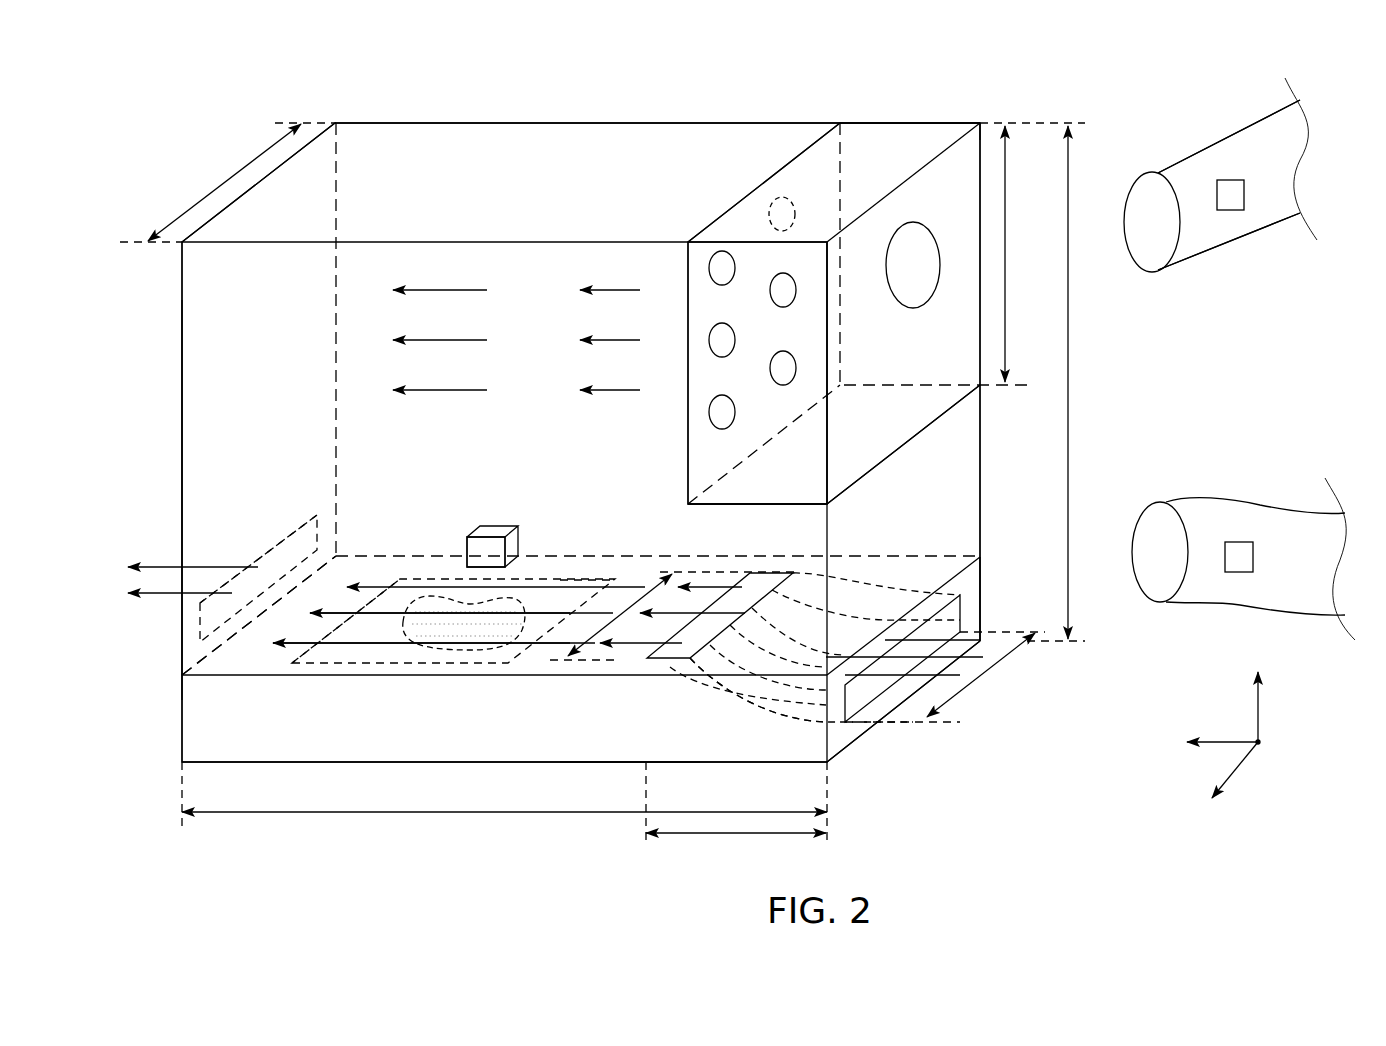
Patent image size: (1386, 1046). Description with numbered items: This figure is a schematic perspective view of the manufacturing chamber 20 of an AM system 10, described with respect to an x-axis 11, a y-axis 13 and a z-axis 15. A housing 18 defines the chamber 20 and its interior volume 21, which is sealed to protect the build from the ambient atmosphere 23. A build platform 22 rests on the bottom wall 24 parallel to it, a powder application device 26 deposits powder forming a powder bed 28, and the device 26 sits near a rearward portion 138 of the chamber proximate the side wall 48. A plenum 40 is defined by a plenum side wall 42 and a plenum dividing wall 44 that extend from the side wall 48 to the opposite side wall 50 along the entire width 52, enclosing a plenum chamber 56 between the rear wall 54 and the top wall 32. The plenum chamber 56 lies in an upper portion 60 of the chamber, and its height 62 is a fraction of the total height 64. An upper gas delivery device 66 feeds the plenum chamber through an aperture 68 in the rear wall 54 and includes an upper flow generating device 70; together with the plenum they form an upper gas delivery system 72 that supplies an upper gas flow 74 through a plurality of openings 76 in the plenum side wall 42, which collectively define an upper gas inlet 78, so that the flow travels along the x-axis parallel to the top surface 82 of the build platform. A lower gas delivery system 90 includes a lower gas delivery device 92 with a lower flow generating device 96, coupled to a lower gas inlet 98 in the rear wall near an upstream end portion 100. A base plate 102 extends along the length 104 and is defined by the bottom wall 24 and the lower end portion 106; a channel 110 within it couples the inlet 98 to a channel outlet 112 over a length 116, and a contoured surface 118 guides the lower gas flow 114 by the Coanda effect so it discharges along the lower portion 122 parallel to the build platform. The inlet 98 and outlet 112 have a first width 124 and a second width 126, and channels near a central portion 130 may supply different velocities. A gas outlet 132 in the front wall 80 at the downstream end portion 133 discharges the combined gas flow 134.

The AM system 10 is at (1092, 55).
The x-axis 11 is at (1212, 738).
The y-axis 13 is at (1240, 762).
The z-axis 15 is at (1262, 706).
The housing 18 is at (672, 121).
The manufacturing chamber 20 is at (458, 168).
The interior volume 21 is at (528, 452).
The build platform 22 is at (540, 665).
The ambient atmosphere 23 is at (1216, 372).
The bottom wall 24 is at (248, 678).
The powder application device 26 is at (492, 535).
The powder bed 28 is at (440, 630).
The top wall 32 is at (368, 121).
The plenum 40 is at (885, 150).
The plenum side wall 42 is at (686, 440).
The plenum dividing wall 44 is at (702, 505).
The side wall 48 is at (925, 121).
The side wall 50 is at (180, 336).
The width 52 is at (228, 176).
The rear wall 54 is at (981, 456).
The plenum chamber 56 is at (888, 436).
The upper portion 60 is at (992, 110).
The height 62 is at (1007, 244).
The total height 64 is at (1070, 360).
The upper gas delivery device 66 is at (1228, 138).
The aperture 68 is at (925, 224).
The upper flow generating device 70 is at (1246, 188).
The upper gas delivery system 72 is at (1177, 120).
The upper gas flow 74 is at (487, 290).
The plurality of openings 76 is at (715, 325).
The upper gas inlet 78 is at (755, 150).
The front wall 80 is at (180, 284).
The top surface 82 is at (366, 645).
The lower gas delivery system 90 is at (1020, 745).
The lower gas delivery device 92 is at (1275, 503).
The lower flow generating device 96 is at (1255, 556).
The lower gas inlet 98 is at (905, 708).
The upstream end portion 100 is at (847, 760).
The base plate 102 is at (588, 762).
The length 104 is at (440, 808).
The lower end portion 106 is at (318, 766).
The channel 110 is at (758, 740).
The channel outlet 112 is at (645, 660).
The lower gas flow 114 is at (415, 580).
The length 116 is at (722, 836).
The contoured surface 118 is at (738, 714).
The lower portion 122 is at (200, 558).
The first width 124 is at (982, 708).
The second width 126 is at (655, 572).
The central portion 130 is at (330, 584).
The gas outlet 132 is at (272, 540).
The downstream end portion 133 is at (166, 668).
The gas flow 134 is at (162, 596).
The rearward portion 138 is at (462, 510).